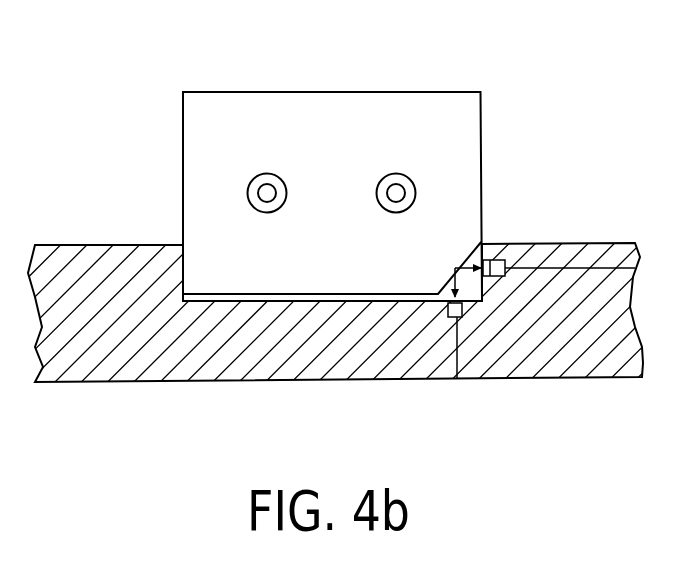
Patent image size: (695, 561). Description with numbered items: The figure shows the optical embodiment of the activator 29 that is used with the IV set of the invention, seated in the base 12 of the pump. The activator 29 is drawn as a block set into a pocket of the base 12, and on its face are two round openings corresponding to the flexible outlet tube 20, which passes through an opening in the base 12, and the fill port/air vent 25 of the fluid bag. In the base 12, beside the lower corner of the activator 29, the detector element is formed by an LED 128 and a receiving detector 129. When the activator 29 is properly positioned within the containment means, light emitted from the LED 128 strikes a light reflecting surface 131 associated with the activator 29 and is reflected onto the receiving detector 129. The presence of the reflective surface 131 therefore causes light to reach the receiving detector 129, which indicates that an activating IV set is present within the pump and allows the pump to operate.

The base 12 is at (162, 370).
The activator 29 is at (355, 92).
The flexible outlet tube 20 is at (250, 193).
The fill port/air vent 25 is at (417, 188).
The LED 128 is at (505, 261).
The receiving detector 129 is at (463, 310).
The light reflecting surface 131 is at (443, 300).